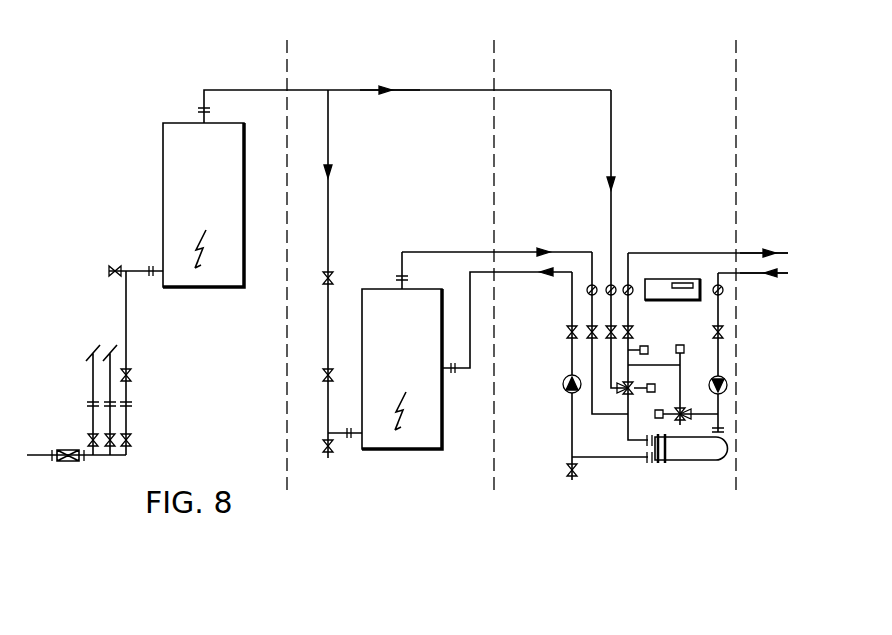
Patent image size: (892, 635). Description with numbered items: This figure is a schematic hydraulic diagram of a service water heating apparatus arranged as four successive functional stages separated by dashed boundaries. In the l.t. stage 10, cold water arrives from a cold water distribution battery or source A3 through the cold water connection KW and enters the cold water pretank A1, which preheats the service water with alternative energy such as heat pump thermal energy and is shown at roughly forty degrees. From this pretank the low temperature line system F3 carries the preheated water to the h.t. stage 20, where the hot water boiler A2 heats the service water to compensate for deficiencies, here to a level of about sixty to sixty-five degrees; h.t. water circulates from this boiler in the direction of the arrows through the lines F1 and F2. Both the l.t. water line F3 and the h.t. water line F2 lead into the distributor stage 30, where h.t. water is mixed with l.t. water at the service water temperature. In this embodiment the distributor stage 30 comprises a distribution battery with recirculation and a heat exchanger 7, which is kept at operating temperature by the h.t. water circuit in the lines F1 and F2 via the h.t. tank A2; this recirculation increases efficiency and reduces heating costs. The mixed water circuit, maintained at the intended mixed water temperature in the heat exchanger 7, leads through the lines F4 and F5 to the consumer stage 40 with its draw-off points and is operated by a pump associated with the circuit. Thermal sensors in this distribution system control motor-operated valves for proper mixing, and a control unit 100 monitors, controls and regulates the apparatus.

The l.t. stage 10 is at (159, 60).
The h.t. stage 20 is at (400, 60).
The distributor stage 30 is at (622, 60).
The consumer stage 40 is at (780, 60).
The cold water pretank A1 is at (214, 158).
The hot water boiler A2 is at (411, 323).
The cold water distribution battery A3 is at (79, 403).
The cold water connection KW is at (136, 346).
The h.t. water line F1 is at (512, 276).
The h.t. water line F2 is at (513, 250).
The l.t. water line F3 is at (428, 93).
The mixed water line F4 is at (638, 252).
The mixed water return line F5 is at (748, 276).
The control unit 100 is at (660, 301).
The heat exchanger 7 is at (700, 453).